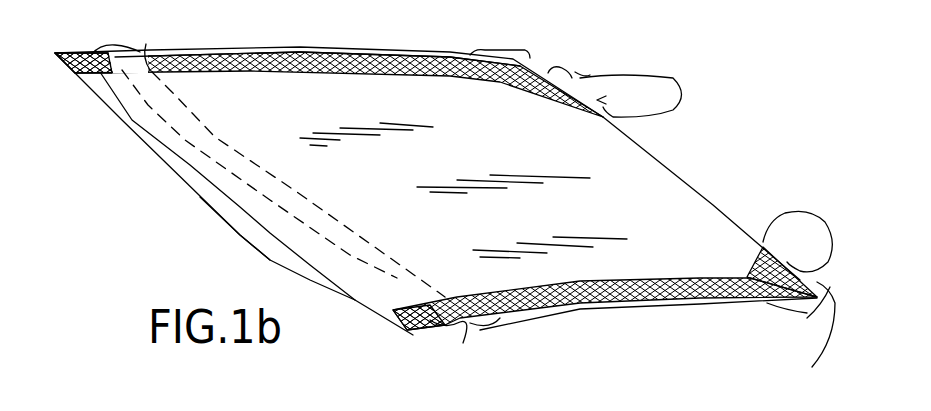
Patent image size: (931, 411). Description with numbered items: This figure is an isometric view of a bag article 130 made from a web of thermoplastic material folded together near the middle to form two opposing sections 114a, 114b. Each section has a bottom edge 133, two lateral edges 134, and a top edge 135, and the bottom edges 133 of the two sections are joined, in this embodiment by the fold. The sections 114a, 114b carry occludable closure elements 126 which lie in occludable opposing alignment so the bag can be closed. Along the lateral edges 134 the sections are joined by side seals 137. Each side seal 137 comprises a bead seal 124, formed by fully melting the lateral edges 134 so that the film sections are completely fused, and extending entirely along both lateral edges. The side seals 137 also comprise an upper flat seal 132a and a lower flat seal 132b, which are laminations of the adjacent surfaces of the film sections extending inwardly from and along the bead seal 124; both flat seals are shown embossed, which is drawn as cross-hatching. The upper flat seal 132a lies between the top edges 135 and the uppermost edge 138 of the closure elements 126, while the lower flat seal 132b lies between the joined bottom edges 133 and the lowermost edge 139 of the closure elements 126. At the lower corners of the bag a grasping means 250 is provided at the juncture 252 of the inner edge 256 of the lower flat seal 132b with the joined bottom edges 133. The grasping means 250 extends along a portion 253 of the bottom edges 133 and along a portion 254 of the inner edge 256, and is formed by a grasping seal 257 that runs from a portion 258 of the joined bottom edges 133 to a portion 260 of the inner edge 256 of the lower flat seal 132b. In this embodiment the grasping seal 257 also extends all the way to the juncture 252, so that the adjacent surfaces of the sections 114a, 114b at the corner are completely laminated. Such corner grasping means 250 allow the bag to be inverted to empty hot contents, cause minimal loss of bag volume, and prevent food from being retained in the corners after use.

The opposing section 114a is at (240, 207).
The opposing section 114b is at (240, 240).
The bead seal 124 is at (536, 66).
The occludable closure elements 126 is at (397, 272).
The bag article 130 is at (623, 147).
The upper flat seal 132a is at (80, 76).
The lower flat seal 132b is at (387, 67).
The bottom edge 133 is at (723, 180).
The lateral edge 134 is at (257, 22).
The top edge 135 is at (180, 183).
The side seal 137 is at (558, 75).
The uppermost edge of the closure elements 138 is at (92, 55).
The lowermost edge of the closure elements 139 is at (147, 45).
The grasping means 250 is at (550, 98).
The juncture 252 is at (577, 80).
The portion of the bottom edges 253 is at (714, 192).
The portion of the inner edge 254 is at (793, 317).
The inner edge of the lower flat seal 256 is at (367, 73).
The grasping seal 257 is at (567, 103).
The portion of the joined bottom edges 258 is at (803, 223).
The portion of the inner edge 260 is at (500, 50).